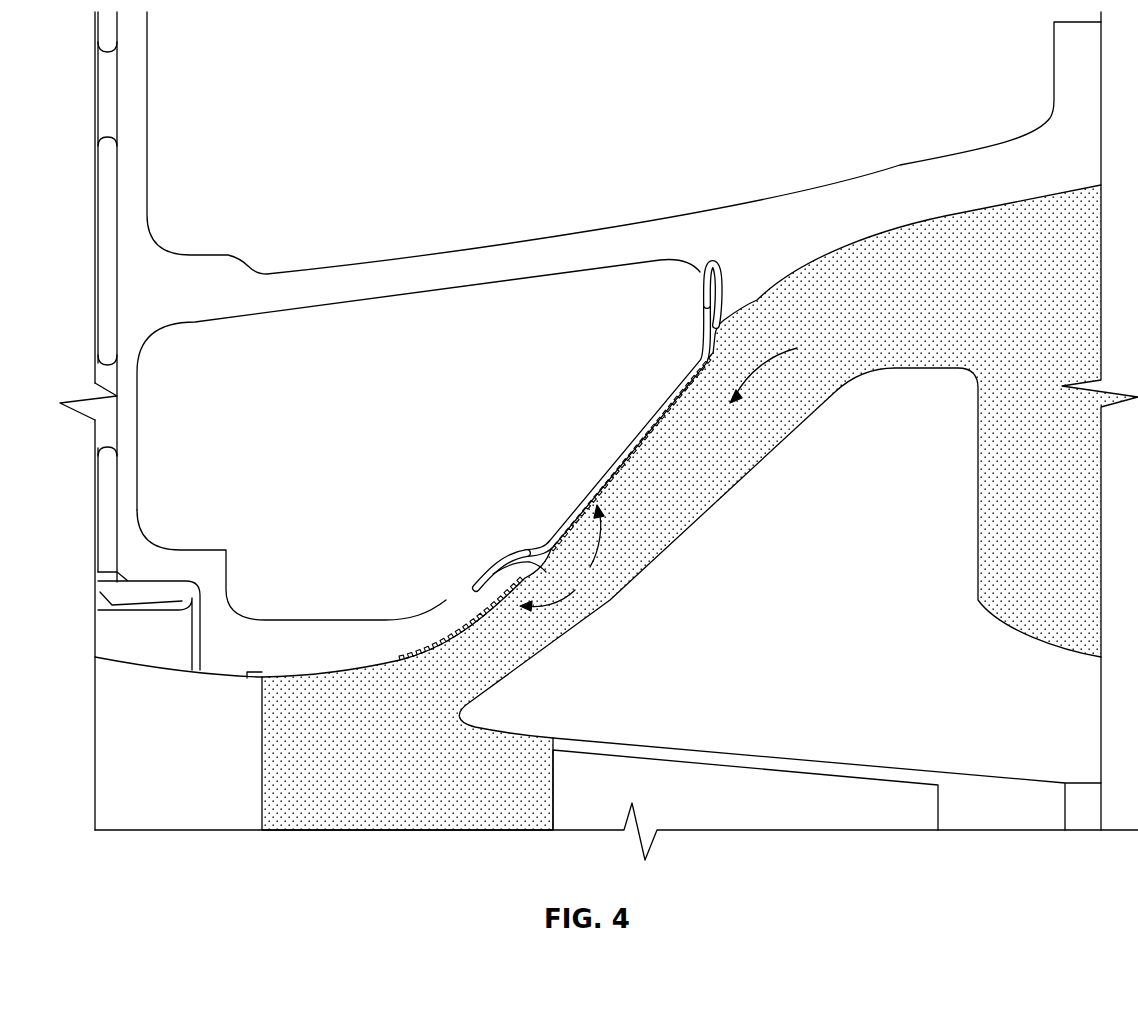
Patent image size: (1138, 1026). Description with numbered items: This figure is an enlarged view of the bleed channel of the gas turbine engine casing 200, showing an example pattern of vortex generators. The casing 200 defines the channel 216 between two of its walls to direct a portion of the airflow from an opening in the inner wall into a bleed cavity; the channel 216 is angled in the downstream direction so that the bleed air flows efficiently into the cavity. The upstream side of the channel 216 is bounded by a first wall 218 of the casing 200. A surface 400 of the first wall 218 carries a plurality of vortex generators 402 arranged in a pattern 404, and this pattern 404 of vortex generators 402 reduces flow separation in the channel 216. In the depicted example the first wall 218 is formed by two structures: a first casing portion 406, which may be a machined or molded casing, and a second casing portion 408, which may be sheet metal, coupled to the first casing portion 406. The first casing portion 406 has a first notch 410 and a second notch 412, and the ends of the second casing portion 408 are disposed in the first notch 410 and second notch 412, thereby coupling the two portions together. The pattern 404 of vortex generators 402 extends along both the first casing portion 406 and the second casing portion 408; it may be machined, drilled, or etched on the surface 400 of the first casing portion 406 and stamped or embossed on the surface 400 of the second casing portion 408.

The casing 200 is at (437, 268).
The channel 216 is at (784, 369).
The first wall 218 is at (578, 502).
The surface 400 is at (476, 628).
The vortex generators 402 is at (488, 604).
The pattern 404 is at (562, 558).
The first casing portion 406 is at (456, 612).
The second casing portion 408 is at (614, 462).
The first notch 410 is at (478, 564).
The second notch 412 is at (704, 274).